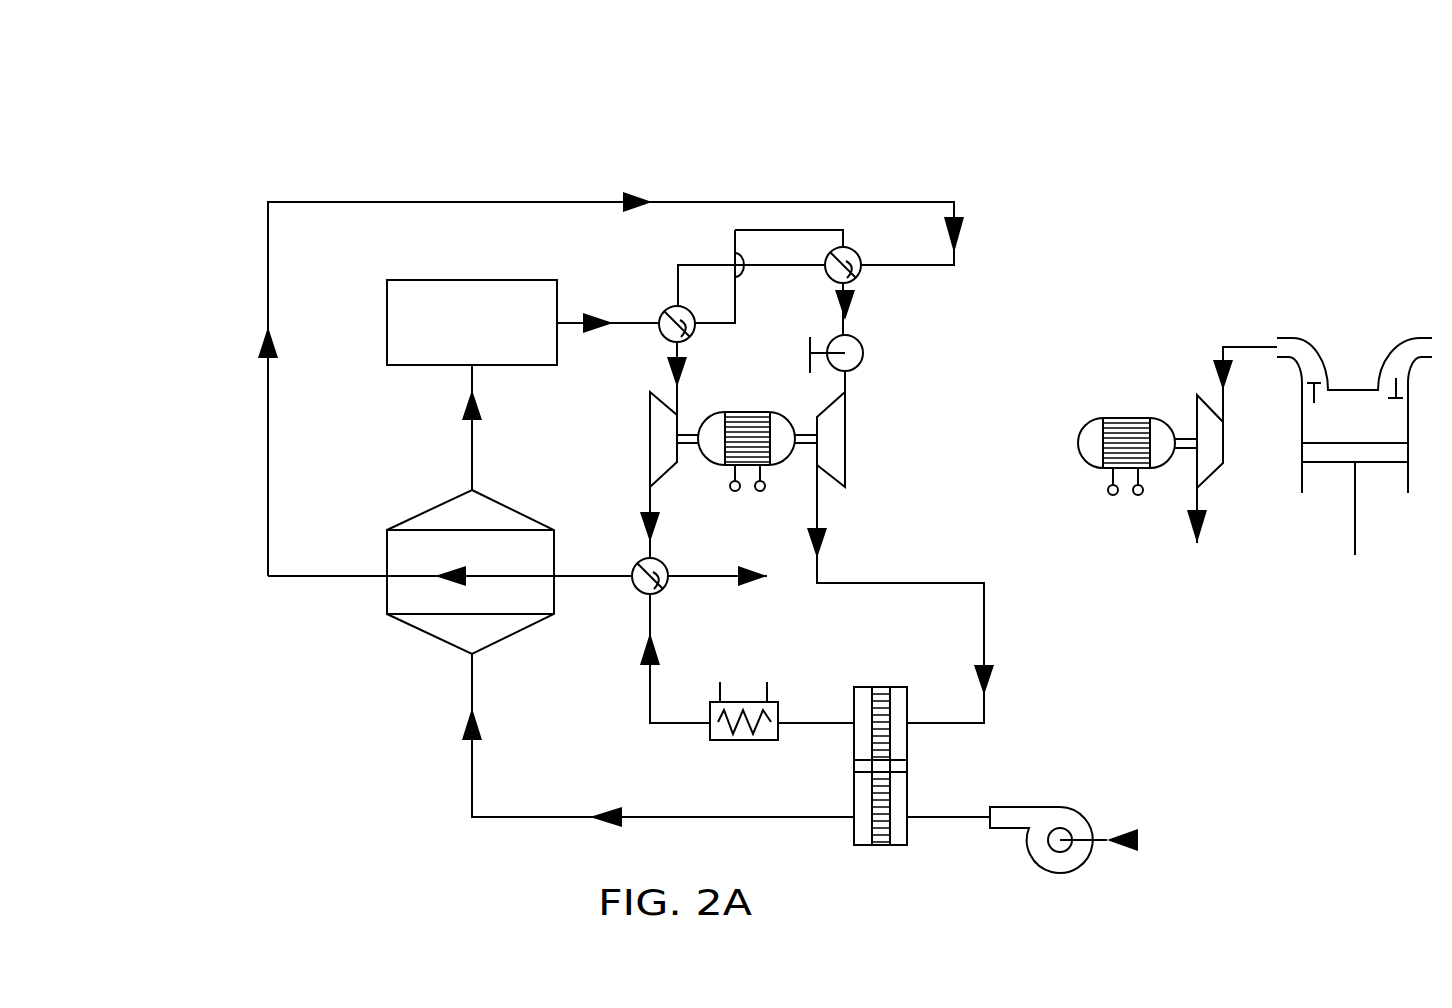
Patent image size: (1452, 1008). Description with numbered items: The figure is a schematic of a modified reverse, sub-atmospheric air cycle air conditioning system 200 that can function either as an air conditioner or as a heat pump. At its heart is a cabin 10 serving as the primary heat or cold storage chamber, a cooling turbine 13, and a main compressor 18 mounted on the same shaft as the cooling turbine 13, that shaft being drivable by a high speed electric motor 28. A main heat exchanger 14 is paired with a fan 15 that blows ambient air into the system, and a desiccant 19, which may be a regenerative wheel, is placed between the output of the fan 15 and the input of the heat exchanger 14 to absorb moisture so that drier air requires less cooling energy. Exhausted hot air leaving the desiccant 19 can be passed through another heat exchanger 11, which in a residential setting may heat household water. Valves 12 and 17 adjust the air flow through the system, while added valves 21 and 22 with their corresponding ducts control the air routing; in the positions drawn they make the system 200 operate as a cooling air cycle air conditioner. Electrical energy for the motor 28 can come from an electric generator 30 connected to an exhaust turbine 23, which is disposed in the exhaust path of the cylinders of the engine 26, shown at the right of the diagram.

The air cycle air conditioning system 200 is at (338, 166).
The cabin 10 is at (527, 318).
The valve 12 is at (665, 312).
The valve 21 is at (835, 257).
The valve 17 is at (848, 352).
The high speed electric motor 28 is at (760, 430).
The main compressor 18 is at (838, 447).
The cooling turbine 13 is at (667, 450).
The main heat exchanger 14 is at (468, 518).
The valve 22 is at (643, 593).
The heat exchanger 11 is at (772, 720).
The desiccant 19 is at (888, 707).
The fan 15 is at (1018, 817).
The electric generator 30 is at (1125, 438).
The exhaust turbine 23 is at (1213, 437).
The engine 26 is at (1342, 417).